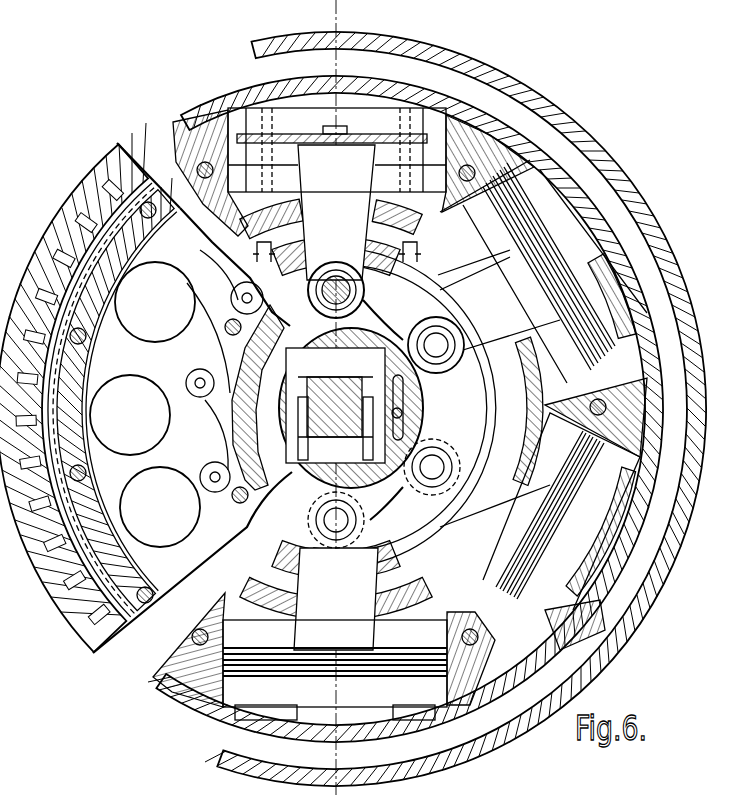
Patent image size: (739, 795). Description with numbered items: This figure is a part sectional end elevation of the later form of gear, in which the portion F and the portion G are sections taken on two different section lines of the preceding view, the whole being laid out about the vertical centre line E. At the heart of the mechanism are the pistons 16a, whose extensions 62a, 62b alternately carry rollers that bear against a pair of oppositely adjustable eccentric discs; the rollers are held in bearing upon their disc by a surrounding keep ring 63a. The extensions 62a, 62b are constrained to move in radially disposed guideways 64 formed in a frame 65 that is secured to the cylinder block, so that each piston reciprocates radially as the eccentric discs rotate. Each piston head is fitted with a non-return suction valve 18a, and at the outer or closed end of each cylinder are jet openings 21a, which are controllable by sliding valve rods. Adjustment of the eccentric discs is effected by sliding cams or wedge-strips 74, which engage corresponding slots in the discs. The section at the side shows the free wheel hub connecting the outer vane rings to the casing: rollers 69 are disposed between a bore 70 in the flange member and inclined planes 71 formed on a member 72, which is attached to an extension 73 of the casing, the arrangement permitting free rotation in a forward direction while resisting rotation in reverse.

The section line E is at (346, 397).
The section F is at (258, 488).
The section G is at (593, 576).
The jet openings 21a is at (483, 47).
The non-return suction valves 18a is at (291, 163).
The pistons 16a is at (575, 527).
The keep ring 63a is at (535, 318).
The piston extension 62a is at (312, 512).
The piston extension 62b is at (370, 408).
The guideways 64 is at (372, 248).
The frame 65 is at (418, 294).
The rollers 69 is at (214, 282).
The bore 70 is at (188, 438).
The inclined planes 71 is at (230, 345).
The member 72 is at (235, 357).
The casing extension 73 is at (240, 438).
The sliding cams or wedge-strips 74 is at (357, 373).